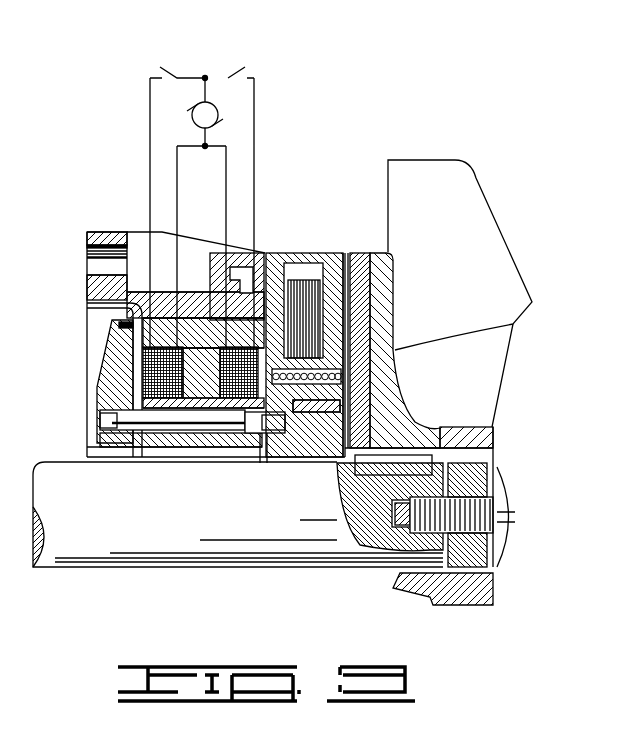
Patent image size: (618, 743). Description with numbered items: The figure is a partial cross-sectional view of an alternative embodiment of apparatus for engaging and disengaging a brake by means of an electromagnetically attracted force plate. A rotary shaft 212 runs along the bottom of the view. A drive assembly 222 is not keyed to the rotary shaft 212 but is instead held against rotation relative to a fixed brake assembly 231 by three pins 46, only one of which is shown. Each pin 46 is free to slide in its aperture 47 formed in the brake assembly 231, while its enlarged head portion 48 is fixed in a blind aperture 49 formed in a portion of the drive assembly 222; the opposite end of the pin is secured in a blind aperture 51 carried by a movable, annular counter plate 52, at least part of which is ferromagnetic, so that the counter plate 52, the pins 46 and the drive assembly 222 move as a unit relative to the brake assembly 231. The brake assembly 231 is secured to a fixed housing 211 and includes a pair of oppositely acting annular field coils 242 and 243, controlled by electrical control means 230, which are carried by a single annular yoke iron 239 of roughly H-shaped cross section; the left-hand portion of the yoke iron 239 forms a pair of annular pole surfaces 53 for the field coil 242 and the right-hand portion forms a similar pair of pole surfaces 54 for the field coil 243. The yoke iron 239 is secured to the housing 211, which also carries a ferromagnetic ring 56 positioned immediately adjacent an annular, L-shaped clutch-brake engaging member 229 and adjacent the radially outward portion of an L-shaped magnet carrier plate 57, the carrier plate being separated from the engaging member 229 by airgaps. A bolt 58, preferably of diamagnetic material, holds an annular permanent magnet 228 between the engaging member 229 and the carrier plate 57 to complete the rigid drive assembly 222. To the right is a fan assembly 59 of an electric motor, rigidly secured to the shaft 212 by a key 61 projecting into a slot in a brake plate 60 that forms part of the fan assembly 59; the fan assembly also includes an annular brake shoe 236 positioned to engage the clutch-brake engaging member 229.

The fixed housing 211 is at (102, 230).
The electrical control means 230 is at (216, 63).
The brake assembly 231 is at (127, 326).
The annular pole surfaces 53 is at (120, 340).
The counter plate 52 is at (160, 346).
The field coil 242 is at (97, 377).
The field coil 243 is at (208, 410).
The yoke iron 239 is at (175, 408).
The blind aperture 51 is at (112, 424).
The pins 46 is at (233, 430).
The apertures 47 is at (217, 428).
The enlarged head portions 48 is at (258, 430).
The blind apertures 49 is at (278, 433).
The ring 56 is at (252, 252).
The annular pole surfaces 54 is at (275, 252).
The magnet carrier plate 57 is at (296, 280).
The bolt 58 is at (340, 373).
The permanent magnet 228 is at (322, 252).
The clutch-brake engaging member 229 is at (338, 255).
The brake shoe 236 is at (372, 283).
The drive assembly 222 is at (360, 317).
The brake plate 60 is at (365, 433).
The fan assembly 59 is at (508, 204).
The key 61 is at (423, 465).
The rotary shaft 212 is at (144, 545).